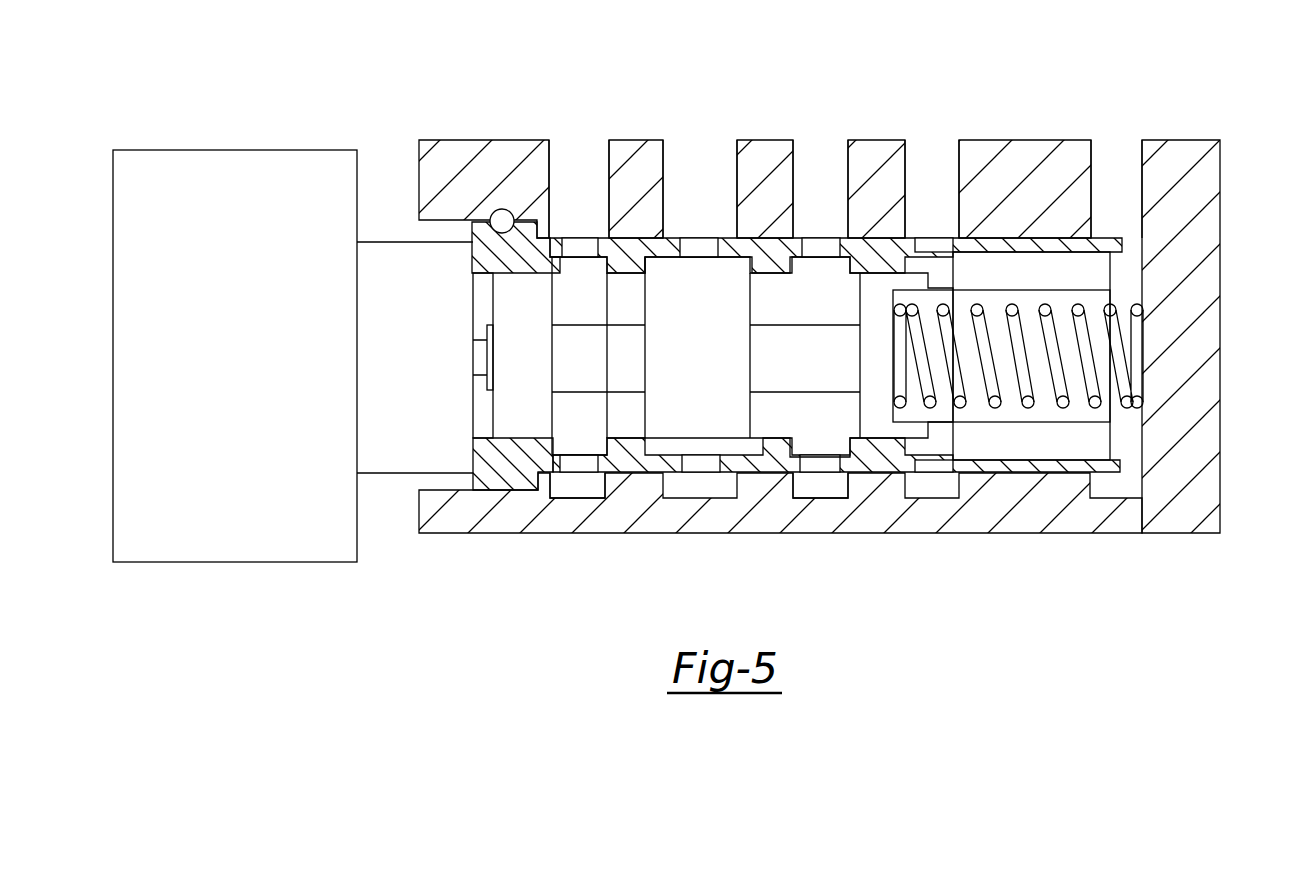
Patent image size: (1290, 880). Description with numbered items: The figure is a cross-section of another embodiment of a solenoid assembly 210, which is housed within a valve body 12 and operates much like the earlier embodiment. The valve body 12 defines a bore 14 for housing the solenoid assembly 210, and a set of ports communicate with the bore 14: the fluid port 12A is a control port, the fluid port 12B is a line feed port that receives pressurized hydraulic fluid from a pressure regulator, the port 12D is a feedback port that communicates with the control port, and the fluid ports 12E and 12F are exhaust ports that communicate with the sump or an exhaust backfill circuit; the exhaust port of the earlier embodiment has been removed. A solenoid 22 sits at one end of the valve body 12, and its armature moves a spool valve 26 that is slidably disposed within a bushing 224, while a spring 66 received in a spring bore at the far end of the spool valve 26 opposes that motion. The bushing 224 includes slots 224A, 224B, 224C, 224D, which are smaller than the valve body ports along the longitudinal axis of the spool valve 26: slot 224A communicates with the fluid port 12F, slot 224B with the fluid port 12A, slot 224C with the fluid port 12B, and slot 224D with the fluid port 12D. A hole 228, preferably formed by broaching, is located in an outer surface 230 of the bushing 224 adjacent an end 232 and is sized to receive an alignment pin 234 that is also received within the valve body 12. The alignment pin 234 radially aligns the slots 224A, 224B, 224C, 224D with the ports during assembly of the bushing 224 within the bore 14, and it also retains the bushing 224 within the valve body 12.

The solenoid assembly 210 is at (1134, 46).
The solenoid 22 is at (203, 140).
The valve body 12 is at (1203, 444).
The fluid port 12F is at (559, 166).
The fluid port 12A is at (676, 167).
The fluid port 12B is at (808, 167).
The feedback port 12D is at (913, 167).
The fluid port 12E is at (1105, 167).
The bore 14 is at (592, 473).
The outer surface 230 is at (796, 473).
The bushing 224 is at (836, 335).
The slot 224A is at (579, 240).
The slot 224B is at (697, 242).
The slot 224C is at (822, 240).
The slot 224D is at (937, 240).
The hole 228 is at (492, 246).
The end 232 is at (473, 482).
The alignment pin 234 is at (499, 209).
The spool valve 26 is at (665, 455).
The spring 66 is at (1141, 310).